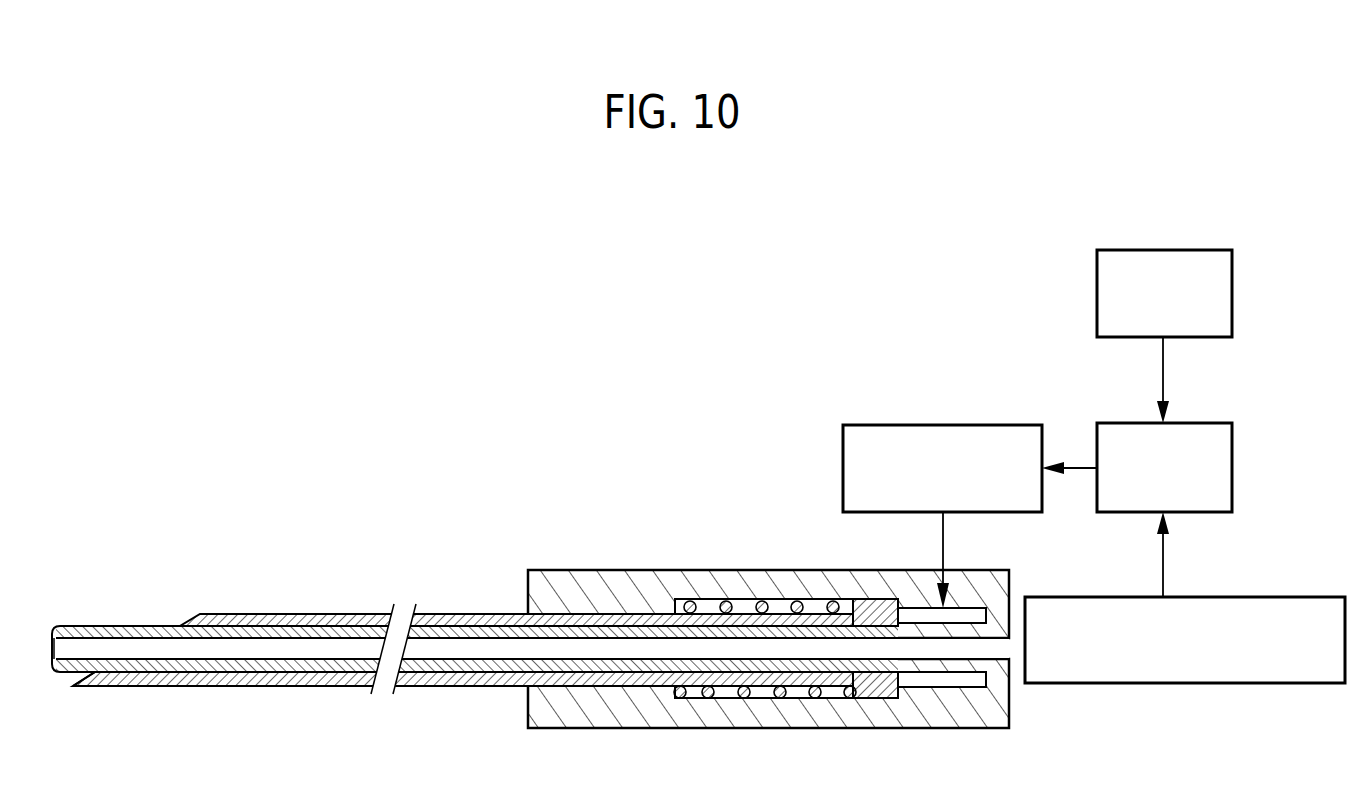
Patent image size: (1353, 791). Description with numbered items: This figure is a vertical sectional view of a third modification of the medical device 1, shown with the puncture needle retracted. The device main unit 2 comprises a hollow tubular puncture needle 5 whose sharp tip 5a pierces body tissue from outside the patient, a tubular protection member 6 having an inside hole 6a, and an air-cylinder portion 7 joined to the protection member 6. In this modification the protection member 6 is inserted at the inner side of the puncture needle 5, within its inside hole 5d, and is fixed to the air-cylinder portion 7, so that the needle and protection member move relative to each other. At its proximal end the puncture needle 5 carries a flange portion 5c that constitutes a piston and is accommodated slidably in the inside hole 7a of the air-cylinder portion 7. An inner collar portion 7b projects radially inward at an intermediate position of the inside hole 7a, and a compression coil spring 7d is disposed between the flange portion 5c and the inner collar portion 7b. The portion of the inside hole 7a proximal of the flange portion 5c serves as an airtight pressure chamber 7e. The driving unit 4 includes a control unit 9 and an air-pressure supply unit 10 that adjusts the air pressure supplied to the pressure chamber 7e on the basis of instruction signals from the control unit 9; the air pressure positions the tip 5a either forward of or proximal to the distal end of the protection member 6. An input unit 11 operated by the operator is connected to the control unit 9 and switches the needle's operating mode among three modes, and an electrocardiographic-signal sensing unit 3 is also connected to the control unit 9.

The medical device 1 is at (704, 304).
The device main unit 2 is at (516, 504).
The electrocardiographic-signal sensing unit 3 is at (1165, 684).
The driving unit 4 is at (1078, 353).
The puncture needle 5 is at (283, 613).
The tip 5a is at (77, 686).
The flange portion 5c is at (870, 698).
The inside hole 5d is at (423, 640).
The protection member 6 is at (142, 626).
The inside hole 6a is at (95, 646).
The air-cylinder portion 7 is at (806, 569).
The inside hole 7a is at (792, 699).
The inner collar portion 7b is at (679, 598).
The compression coil spring 7d is at (766, 598).
The pressure chamber 7e is at (921, 688).
The control unit 9 is at (1108, 422).
The air-pressure supply unit 10 is at (978, 424).
The input unit 11 is at (1163, 249).